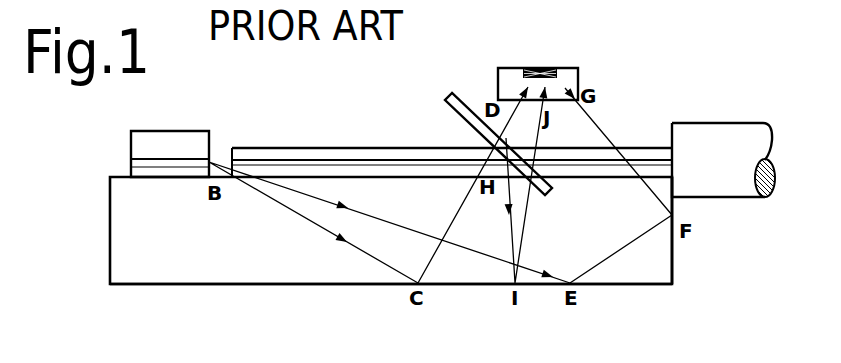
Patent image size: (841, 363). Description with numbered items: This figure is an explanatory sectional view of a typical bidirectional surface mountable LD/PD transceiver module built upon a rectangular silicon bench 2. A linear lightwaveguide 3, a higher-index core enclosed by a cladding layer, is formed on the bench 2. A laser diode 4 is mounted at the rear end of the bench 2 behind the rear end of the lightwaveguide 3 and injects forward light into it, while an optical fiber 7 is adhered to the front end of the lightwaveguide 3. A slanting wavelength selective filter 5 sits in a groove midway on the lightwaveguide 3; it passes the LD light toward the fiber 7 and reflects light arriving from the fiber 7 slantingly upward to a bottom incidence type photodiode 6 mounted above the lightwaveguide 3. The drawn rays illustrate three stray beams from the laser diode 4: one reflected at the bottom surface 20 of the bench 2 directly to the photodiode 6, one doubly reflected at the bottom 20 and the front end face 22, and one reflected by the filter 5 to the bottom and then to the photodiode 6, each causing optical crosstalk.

The silicon bench 2 is at (205, 255).
The lightwaveguide 3 is at (356, 160).
The laser diode (LD) 4 is at (193, 145).
The wavelength selective filter 5 is at (467, 101).
The photodiode (PD) 6 is at (566, 75).
The optical fiber 7 is at (738, 180).
The bottom surface of substrate 20 is at (307, 285).
The end face of substrate 22 is at (672, 269).